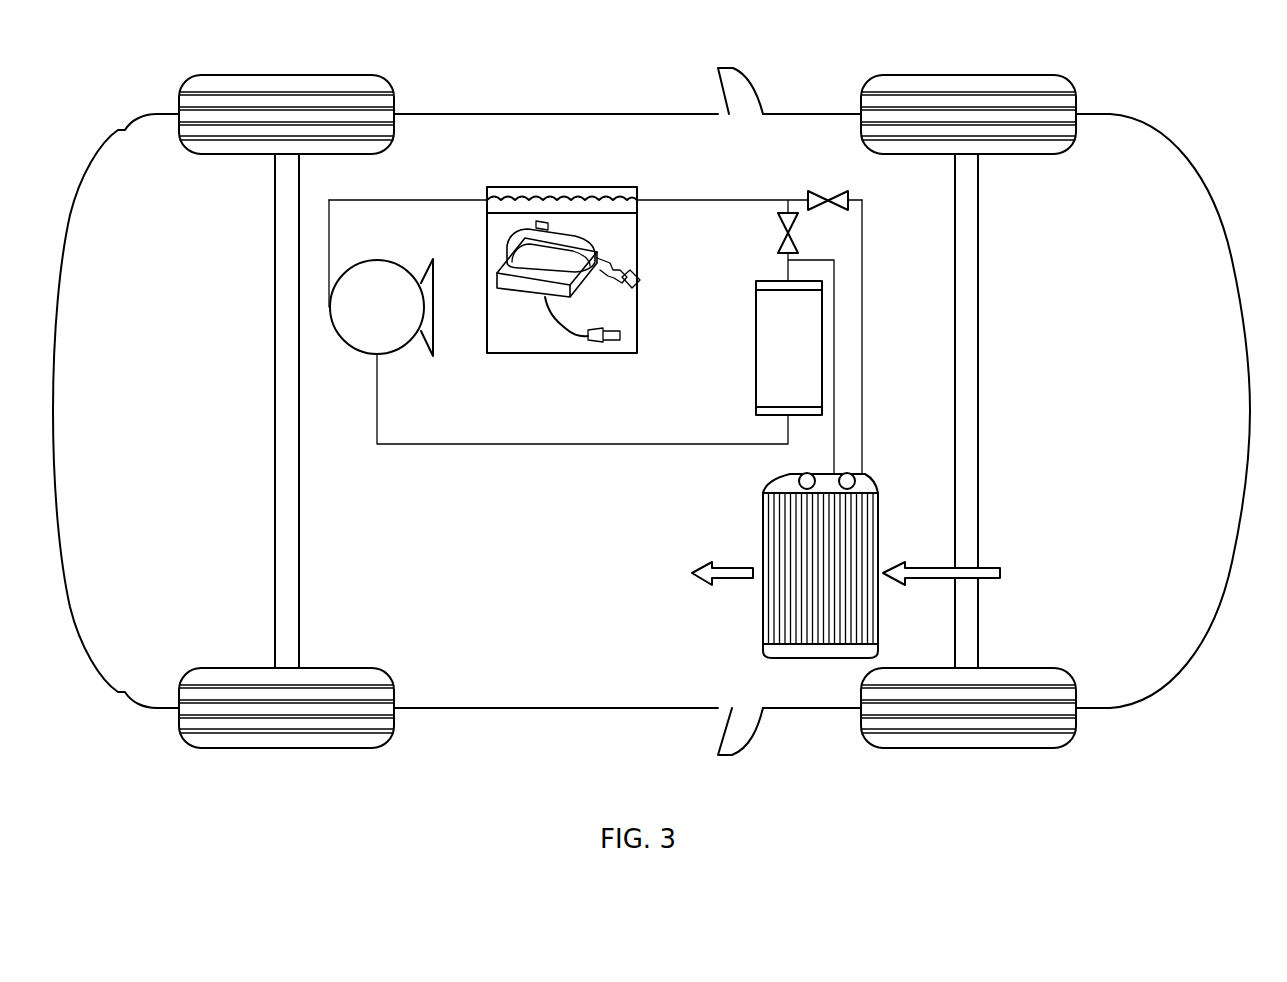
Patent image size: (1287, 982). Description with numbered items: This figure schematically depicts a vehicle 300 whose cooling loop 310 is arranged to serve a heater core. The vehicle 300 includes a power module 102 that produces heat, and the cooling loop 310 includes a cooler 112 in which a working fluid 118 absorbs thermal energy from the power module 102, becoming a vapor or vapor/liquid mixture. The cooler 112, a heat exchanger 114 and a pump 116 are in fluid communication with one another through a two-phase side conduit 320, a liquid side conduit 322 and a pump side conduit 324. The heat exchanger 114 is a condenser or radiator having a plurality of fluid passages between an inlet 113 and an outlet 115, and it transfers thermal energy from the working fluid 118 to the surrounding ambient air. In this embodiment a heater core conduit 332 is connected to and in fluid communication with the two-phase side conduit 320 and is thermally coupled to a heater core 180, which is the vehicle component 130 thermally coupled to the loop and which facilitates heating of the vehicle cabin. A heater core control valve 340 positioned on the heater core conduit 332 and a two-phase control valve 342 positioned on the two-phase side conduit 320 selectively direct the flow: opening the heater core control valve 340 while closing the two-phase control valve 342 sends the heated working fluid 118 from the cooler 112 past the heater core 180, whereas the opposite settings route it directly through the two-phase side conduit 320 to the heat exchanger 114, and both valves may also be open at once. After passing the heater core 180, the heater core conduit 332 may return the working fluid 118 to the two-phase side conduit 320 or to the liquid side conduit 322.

The vehicle 300 is at (656, 387).
The cooling loop 310 is at (660, 135).
The two-phase side conduit 320 is at (673, 199).
The liquid side conduit 322 is at (576, 443).
The pump side conduit 324 is at (407, 199).
The heater core conduit 332 is at (863, 299).
The heater core control valve 340 is at (838, 190).
The two-phase control valve 342 is at (782, 248).
The pump 116 is at (386, 261).
The working fluid 118 is at (508, 205).
The cooler 112 is at (563, 246).
The power module 102 is at (523, 292).
The inlet 113 is at (788, 280).
The heat exchanger 114 is at (752, 347).
The outlet 115 is at (788, 416).
The heater core 180 is at (755, 556).
The vehicle component 130 is at (819, 565).